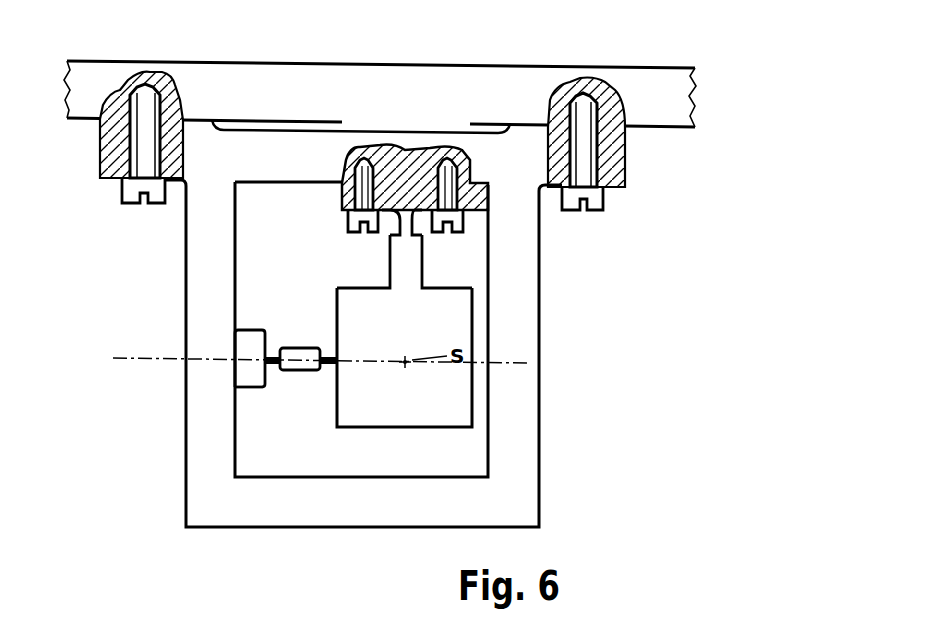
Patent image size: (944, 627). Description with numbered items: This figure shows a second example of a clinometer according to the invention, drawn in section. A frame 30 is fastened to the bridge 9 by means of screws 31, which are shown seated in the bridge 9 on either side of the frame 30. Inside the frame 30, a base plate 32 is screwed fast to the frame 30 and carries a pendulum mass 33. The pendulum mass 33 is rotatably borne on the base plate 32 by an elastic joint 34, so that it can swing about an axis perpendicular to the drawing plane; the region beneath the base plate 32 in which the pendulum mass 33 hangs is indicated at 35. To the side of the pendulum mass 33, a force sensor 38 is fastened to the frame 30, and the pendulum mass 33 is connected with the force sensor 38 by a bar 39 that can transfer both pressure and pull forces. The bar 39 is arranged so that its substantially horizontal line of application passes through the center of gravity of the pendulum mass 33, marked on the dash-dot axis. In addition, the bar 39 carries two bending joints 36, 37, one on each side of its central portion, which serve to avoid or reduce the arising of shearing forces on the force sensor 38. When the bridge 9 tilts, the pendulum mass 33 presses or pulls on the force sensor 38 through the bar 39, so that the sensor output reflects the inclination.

The bridge 9 is at (658, 100).
The frame 30 is at (515, 505).
The screws 31 is at (145, 165).
The base plate 32 is at (407, 198).
The pendulum mass 33 is at (440, 417).
The elastic joint 34 is at (405, 235).
The leaf spring 35 is at (407, 269).
The bending joint 36 is at (297, 362).
The bending joint 37 is at (337, 360).
The force sensor 38 is at (243, 342).
The bar 39 is at (250, 383).